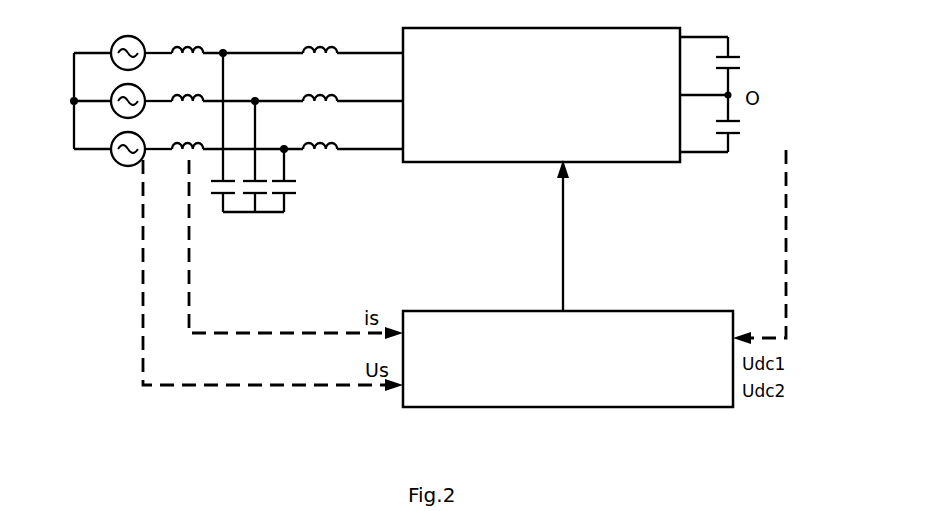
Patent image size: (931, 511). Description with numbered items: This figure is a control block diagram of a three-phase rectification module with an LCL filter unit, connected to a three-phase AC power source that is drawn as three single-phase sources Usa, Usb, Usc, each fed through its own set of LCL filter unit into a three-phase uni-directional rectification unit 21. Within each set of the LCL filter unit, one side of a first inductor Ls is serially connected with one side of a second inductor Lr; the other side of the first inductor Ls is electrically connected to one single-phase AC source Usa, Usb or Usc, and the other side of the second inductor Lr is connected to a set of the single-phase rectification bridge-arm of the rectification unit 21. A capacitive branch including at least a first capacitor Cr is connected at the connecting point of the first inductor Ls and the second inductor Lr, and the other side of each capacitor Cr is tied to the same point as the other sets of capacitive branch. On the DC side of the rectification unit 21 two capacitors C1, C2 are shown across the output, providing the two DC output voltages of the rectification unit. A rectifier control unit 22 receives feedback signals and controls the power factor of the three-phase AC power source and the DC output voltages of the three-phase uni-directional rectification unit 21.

The three-phase uni-directional rectification unit 21 is at (622, 67).
The rectifier control unit 22 is at (625, 323).
The first inductor Ls is at (187, 85).
The second inductor Lr is at (320, 85).
The first capacitor Cr is at (260, 203).
The DC-link capacitor C1 is at (745, 57).
The DC-link capacitor C2 is at (745, 132).
The phase A voltage source Usa is at (116, 38).
The phase B voltage source Usb is at (116, 94).
The phase C voltage source Usc is at (111, 154).